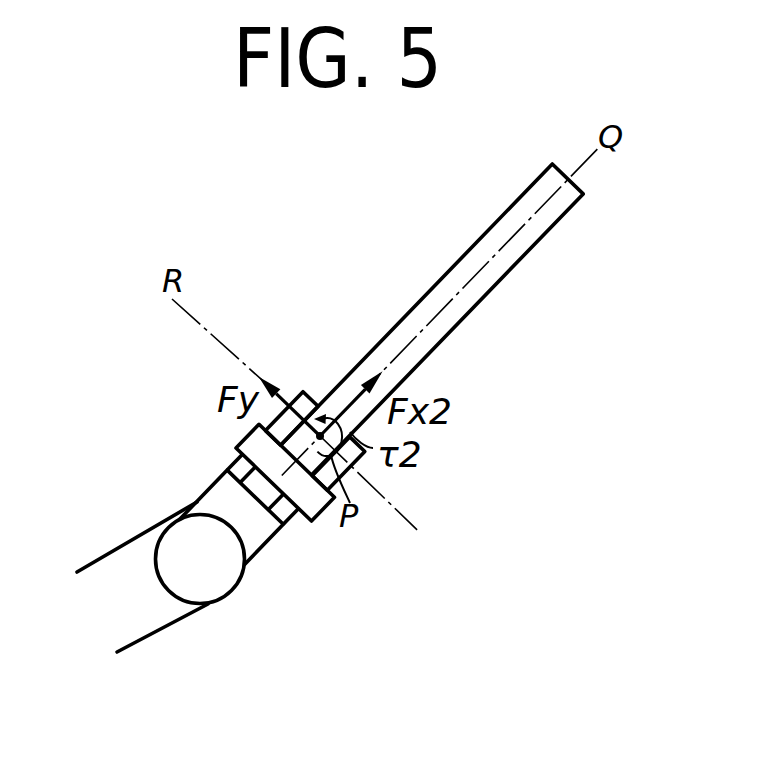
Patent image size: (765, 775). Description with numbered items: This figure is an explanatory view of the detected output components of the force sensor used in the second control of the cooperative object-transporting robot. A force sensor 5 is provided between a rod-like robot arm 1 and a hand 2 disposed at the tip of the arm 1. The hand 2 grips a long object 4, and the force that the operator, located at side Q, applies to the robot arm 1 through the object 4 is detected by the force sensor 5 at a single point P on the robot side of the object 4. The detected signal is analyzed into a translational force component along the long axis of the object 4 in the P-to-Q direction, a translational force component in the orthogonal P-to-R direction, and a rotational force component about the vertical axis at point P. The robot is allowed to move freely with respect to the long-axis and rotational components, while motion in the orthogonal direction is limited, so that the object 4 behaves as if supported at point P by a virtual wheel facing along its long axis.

The robot arm 1 is at (122, 559).
The hand 2 is at (247, 441).
The object 4 is at (443, 277).
The force sensor 5 is at (241, 467).